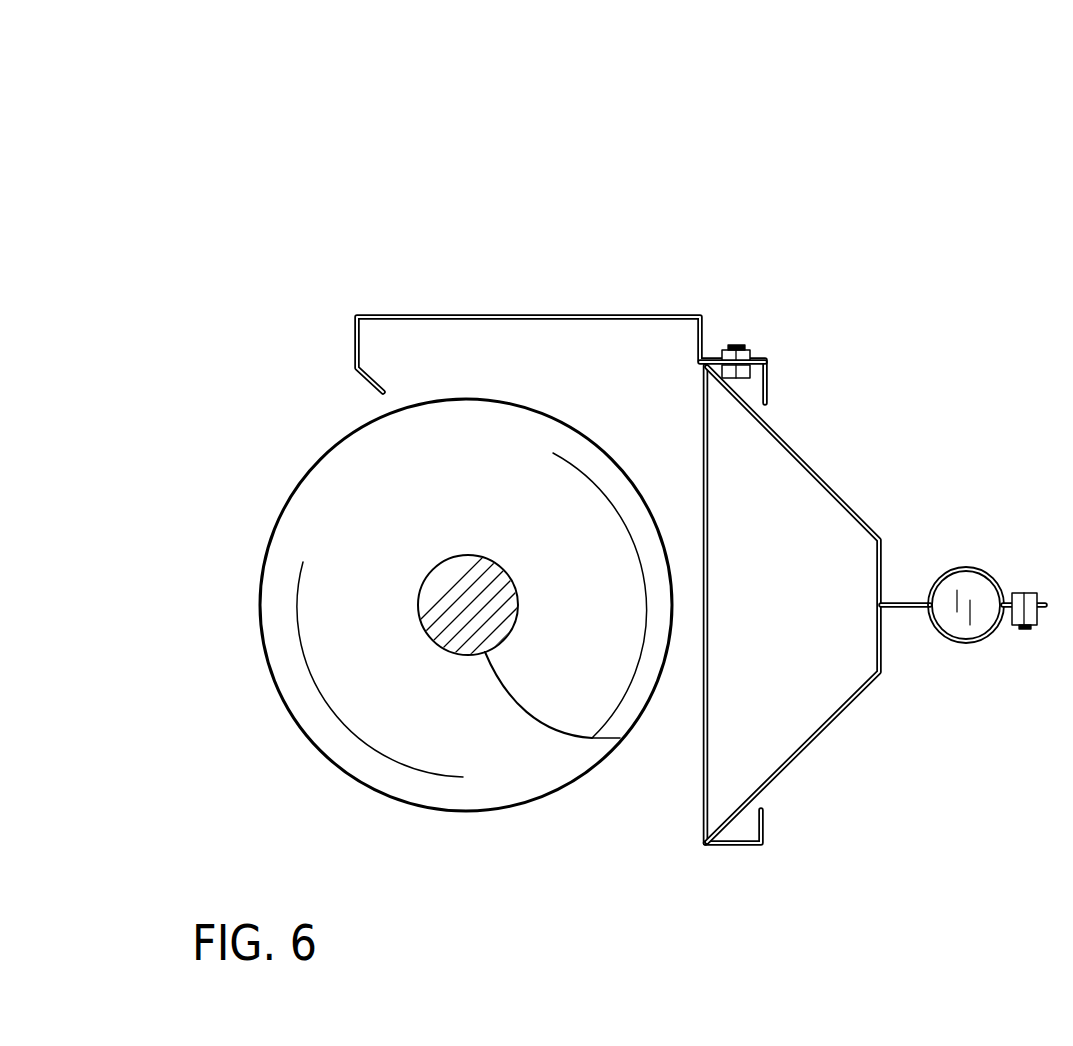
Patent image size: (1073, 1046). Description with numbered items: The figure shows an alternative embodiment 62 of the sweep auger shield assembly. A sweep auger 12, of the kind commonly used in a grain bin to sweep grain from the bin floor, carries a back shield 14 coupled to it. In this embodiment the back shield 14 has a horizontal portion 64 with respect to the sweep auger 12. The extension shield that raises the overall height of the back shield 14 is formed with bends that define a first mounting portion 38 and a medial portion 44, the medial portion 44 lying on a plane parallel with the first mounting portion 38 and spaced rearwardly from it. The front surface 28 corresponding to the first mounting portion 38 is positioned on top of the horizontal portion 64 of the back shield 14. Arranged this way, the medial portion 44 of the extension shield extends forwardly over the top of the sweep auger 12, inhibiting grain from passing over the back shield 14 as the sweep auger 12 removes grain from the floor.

The sweep auger 12 is at (473, 400).
The back shield 14 is at (815, 472).
The front surface 28 is at (718, 367).
The first mounting portion 38 is at (718, 350).
The medial portion 44 is at (558, 320).
The alternative embodiment 62 is at (818, 157).
The horizontal portion 64 is at (762, 358).